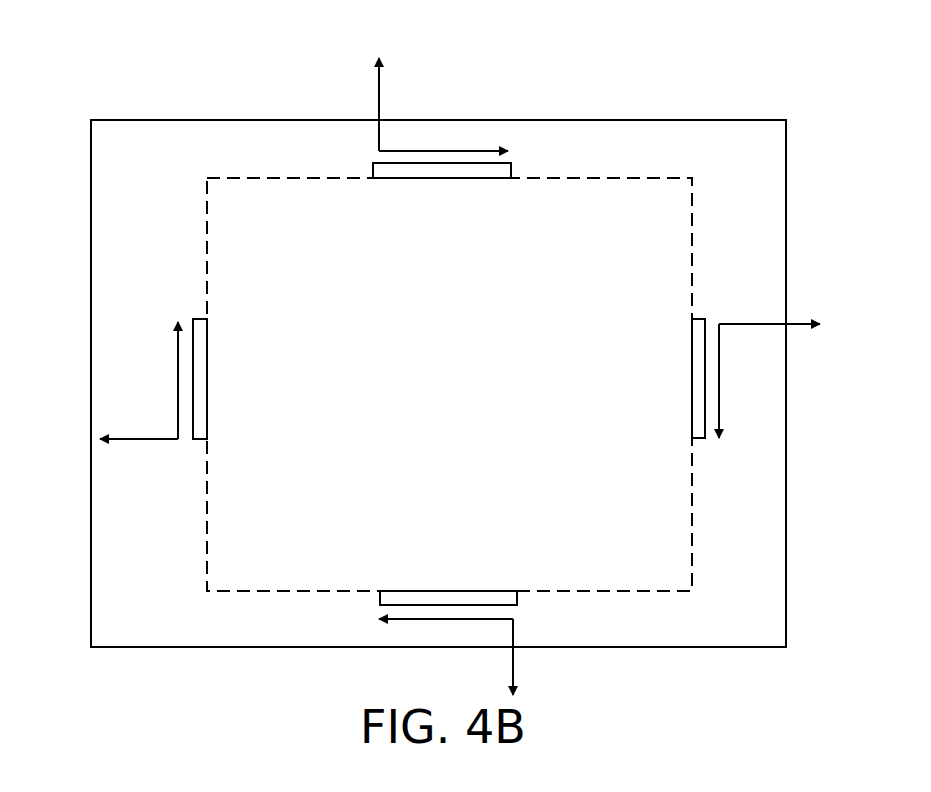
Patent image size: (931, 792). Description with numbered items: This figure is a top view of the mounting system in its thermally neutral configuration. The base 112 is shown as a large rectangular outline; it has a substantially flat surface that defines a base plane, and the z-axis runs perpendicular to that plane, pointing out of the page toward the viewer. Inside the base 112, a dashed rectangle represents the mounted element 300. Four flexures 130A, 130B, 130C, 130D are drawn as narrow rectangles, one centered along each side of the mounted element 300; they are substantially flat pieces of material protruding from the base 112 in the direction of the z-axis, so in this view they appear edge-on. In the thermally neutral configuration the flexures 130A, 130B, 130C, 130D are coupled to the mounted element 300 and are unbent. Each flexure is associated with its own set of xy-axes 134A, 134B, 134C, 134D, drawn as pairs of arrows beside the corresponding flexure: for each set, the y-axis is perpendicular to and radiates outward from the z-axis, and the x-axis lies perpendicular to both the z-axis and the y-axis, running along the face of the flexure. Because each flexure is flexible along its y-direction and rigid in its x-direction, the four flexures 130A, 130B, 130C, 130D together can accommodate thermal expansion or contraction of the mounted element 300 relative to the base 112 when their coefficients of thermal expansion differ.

The base 112 is at (120, 132).
The mounted element 300 is at (208, 193).
The flexure 130A is at (200, 323).
The flexure 130B is at (378, 166).
The flexure 130C is at (700, 437).
The flexure 130D is at (517, 598).
The xy-axes 134A is at (147, 439).
The xy-axes 134B is at (379, 90).
The xy-axes 134C is at (753, 324).
The xy-axes 134D is at (513, 657).